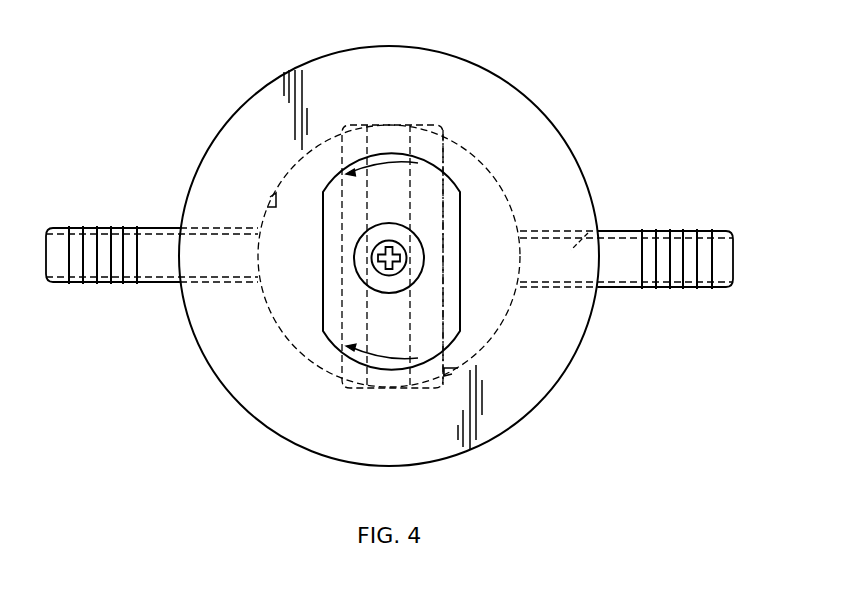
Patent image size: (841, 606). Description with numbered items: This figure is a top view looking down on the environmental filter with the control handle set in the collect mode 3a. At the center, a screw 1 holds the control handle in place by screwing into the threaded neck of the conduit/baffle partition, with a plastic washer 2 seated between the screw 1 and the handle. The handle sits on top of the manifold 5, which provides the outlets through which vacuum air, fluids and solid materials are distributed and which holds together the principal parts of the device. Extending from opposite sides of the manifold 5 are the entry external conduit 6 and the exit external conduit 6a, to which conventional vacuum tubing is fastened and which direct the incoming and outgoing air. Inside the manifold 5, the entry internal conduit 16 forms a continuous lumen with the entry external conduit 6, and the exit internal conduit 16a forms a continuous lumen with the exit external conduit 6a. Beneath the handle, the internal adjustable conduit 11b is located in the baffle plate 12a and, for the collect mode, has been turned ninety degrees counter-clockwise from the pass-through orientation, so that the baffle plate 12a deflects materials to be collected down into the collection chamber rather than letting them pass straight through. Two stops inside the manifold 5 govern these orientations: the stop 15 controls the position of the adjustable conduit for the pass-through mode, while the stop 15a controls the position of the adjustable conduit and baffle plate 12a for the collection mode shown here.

The screw 1 is at (383, 249).
The plastic washer 2 is at (367, 233).
The control handle in collect mode 3a is at (462, 192).
The manifold 5 is at (238, 362).
The entry external conduit 6 is at (673, 290).
The exit external conduit 6a is at (102, 284).
The internal adjustable conduit (lumen) 11b is at (392, 180).
The baffle plate 12a is at (443, 356).
The stop 15 is at (264, 201).
The stop 15a is at (457, 370).
The entry internal conduit (lumen) 16 is at (600, 227).
The exit internal conduit (lumen) 16a is at (157, 250).